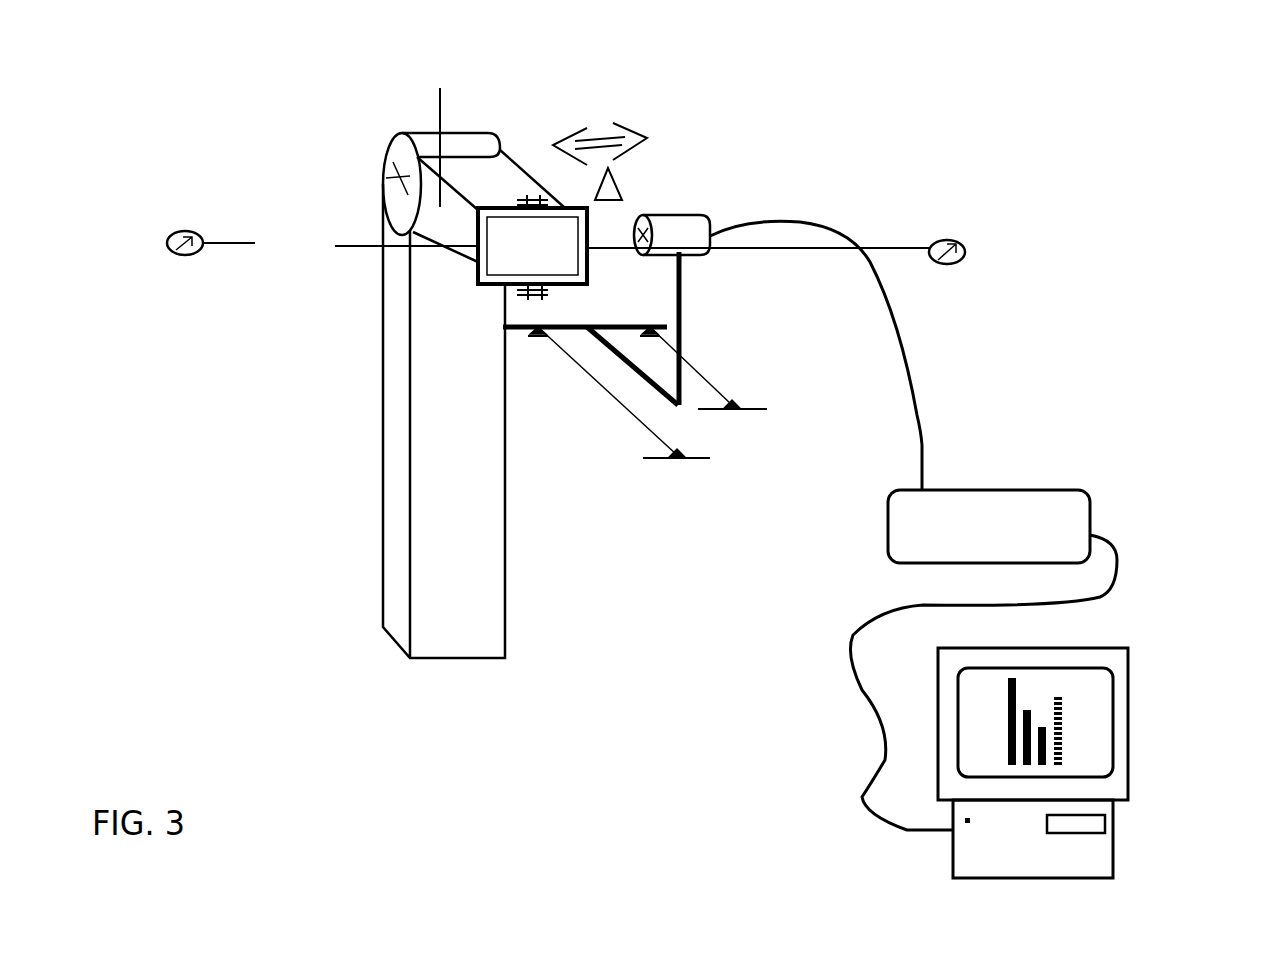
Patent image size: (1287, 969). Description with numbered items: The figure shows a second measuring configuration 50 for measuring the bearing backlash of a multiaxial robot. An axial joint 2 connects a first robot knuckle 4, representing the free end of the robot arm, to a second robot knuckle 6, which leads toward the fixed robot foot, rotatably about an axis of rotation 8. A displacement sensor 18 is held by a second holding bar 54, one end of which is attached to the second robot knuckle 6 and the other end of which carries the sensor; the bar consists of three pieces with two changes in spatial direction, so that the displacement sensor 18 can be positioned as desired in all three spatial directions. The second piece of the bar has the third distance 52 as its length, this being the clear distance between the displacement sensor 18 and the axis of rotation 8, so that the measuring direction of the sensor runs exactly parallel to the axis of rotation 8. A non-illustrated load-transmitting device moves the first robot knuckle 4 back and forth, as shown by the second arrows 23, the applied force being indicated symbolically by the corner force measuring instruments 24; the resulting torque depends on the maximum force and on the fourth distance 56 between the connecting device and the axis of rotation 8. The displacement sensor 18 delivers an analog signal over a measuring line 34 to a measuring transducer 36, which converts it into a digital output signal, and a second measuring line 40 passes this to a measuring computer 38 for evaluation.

The axial joint 2 is at (488, 162).
The first robot knuckle 4 is at (632, 156).
The second robot knuckle 6 is at (487, 618).
The axis of rotation 8 is at (398, 188).
The displacement sensor 18 is at (705, 213).
The second arrows 23 is at (600, 123).
The corner force measuring instruments 24 is at (180, 217).
The measuring line 34 is at (922, 433).
The measuring transducer 36 is at (1060, 542).
The measuring computer 38 is at (1105, 857).
The second measuring line 40 is at (1117, 587).
The second measuring configuration 50 is at (306, 769).
The third distance 52 is at (723, 390).
The second holding bar 54 is at (683, 313).
The fourth distance 56 is at (625, 413).